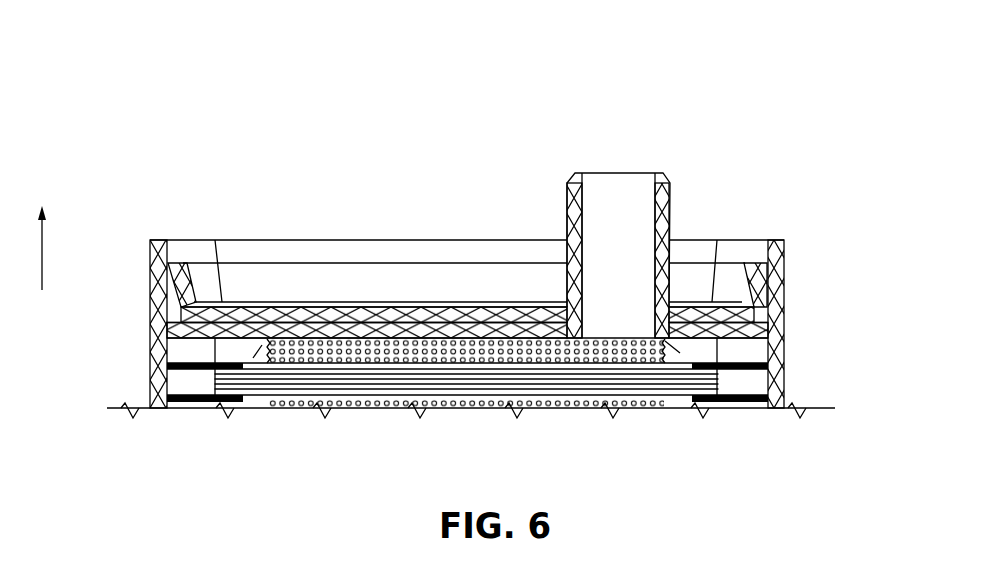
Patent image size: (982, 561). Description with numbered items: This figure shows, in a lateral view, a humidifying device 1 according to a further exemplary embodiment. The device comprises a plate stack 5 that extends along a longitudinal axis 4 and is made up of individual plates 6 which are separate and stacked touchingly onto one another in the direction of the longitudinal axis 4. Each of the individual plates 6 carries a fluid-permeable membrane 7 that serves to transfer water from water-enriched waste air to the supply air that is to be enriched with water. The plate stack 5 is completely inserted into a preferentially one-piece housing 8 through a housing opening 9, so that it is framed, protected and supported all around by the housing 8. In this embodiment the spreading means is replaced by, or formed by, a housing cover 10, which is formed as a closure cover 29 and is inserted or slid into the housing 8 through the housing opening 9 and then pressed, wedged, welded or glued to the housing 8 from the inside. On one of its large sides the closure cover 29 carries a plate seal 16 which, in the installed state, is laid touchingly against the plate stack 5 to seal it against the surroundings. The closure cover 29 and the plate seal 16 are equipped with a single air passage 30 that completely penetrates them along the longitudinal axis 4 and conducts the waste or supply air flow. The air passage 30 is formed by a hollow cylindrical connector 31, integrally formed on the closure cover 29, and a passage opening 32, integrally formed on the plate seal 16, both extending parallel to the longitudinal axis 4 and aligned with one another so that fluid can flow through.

The humidifying device 1 is at (828, 148).
The longitudinal axis 4 is at (44, 247).
The plate stack 5 is at (467, 419).
The individual plates 6 is at (197, 402).
The fluid-permeable membrane 7 is at (397, 407).
The housing 8 is at (772, 367).
The housing opening 9 is at (200, 229).
The housing cover 10 is at (467, 251).
The plate seal 16 is at (760, 328).
The closure cover 29 is at (352, 315).
The air passage 30 is at (605, 237).
The hollow cylindrical connector 31 is at (614, 183).
The passage opening 32 is at (618, 333).